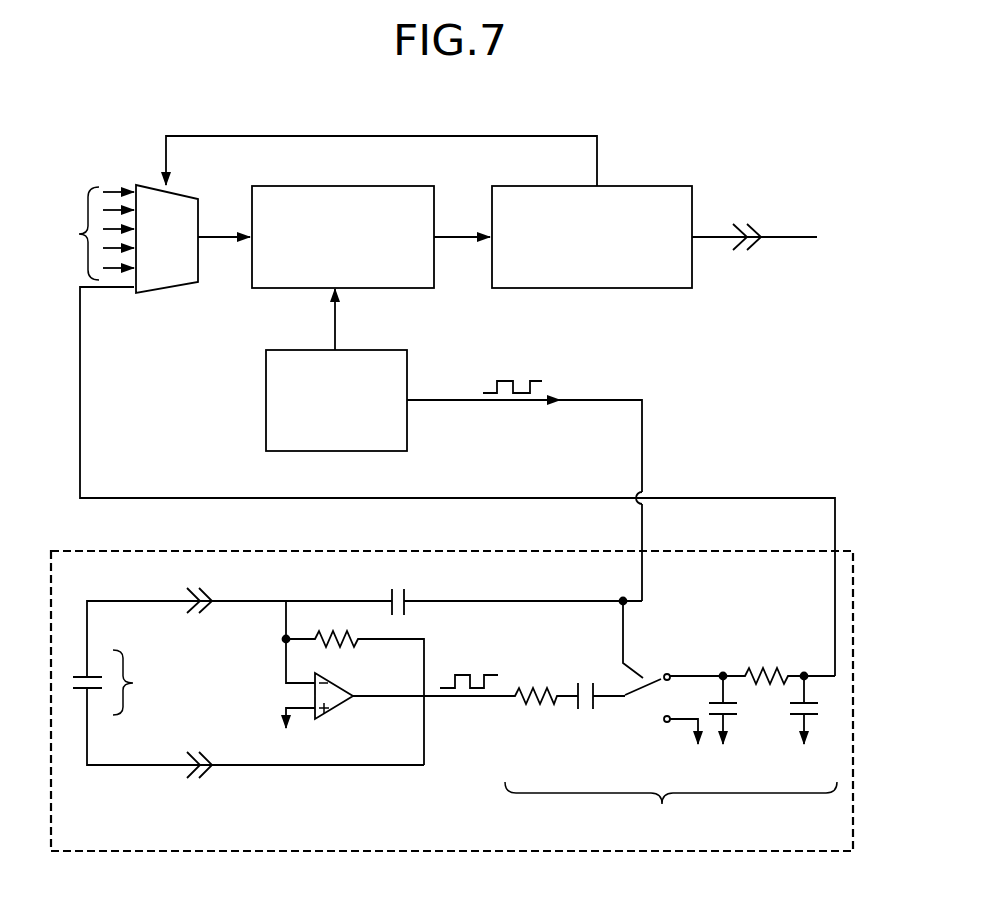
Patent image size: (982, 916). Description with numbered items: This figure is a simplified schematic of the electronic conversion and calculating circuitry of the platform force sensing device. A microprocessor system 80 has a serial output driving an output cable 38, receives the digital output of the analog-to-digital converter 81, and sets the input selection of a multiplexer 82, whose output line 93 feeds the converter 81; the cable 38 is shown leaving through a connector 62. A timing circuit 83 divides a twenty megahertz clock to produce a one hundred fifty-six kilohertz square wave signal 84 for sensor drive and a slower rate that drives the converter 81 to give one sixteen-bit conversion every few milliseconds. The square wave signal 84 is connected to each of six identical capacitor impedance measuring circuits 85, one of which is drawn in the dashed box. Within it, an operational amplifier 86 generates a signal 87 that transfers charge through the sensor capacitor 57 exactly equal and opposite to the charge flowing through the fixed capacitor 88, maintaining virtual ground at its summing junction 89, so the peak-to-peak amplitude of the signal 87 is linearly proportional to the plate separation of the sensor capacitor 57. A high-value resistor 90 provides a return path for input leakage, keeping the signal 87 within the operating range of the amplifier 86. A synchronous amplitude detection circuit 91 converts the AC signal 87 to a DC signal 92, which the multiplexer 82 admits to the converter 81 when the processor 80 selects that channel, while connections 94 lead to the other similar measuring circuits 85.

The output cable 38 is at (780, 237).
The sensor capacitor 57 is at (120, 682).
The connector 62 is at (742, 252).
The microprocessor system 80 is at (602, 288).
The analog-to-digital converter 81 is at (395, 288).
The multiplexer 82 is at (160, 293).
The timing circuit 83 is at (266, 405).
The square wave signal 84 is at (642, 442).
The capacitor impedance measuring circuit 85 is at (155, 855).
The operational amplifier 86 is at (335, 710).
The signal 87 is at (458, 698).
The fixed capacitor 88 is at (404, 592).
The summing junction 89 is at (284, 668).
The resistor 90 is at (340, 645).
The synchronous amplitude detection circuit 91 is at (671, 717).
The DC signal 92 is at (80, 386).
The multiplexer output line 93 is at (225, 236).
The connections 94 is at (89, 233).